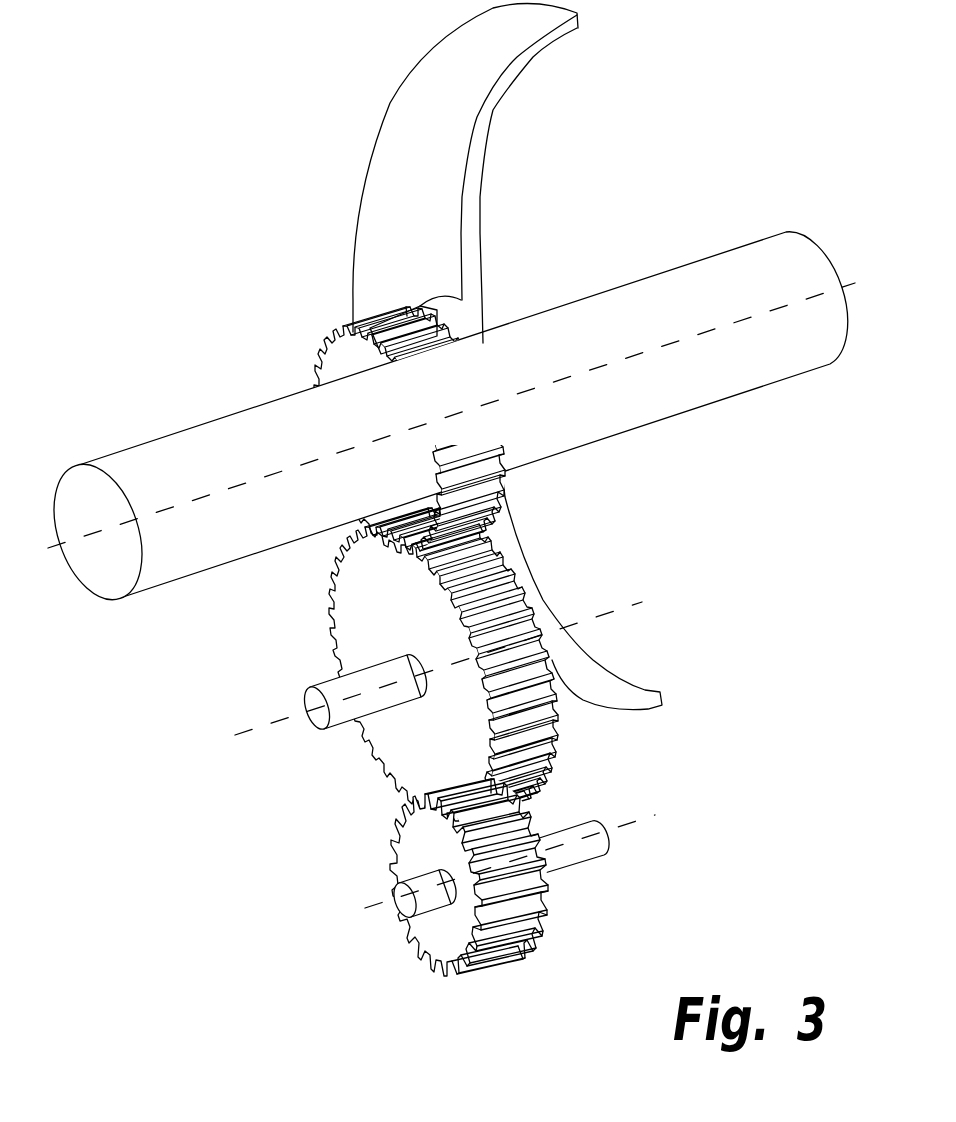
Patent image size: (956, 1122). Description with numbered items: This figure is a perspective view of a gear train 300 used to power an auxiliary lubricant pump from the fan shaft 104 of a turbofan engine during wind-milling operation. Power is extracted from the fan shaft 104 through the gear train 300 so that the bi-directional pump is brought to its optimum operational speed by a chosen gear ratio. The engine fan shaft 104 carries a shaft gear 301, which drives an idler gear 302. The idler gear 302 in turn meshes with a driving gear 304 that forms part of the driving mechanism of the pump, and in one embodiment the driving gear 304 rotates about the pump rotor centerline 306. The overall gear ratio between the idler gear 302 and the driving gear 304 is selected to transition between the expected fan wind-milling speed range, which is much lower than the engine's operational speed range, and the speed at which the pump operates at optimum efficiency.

The fan shaft 104 is at (103, 532).
The gear train 300 is at (170, 749).
The shaft gear 301 is at (340, 350).
The idler gear 302 is at (555, 720).
The driving gear 304 is at (436, 957).
The pump rotor centerline 306 is at (565, 850).